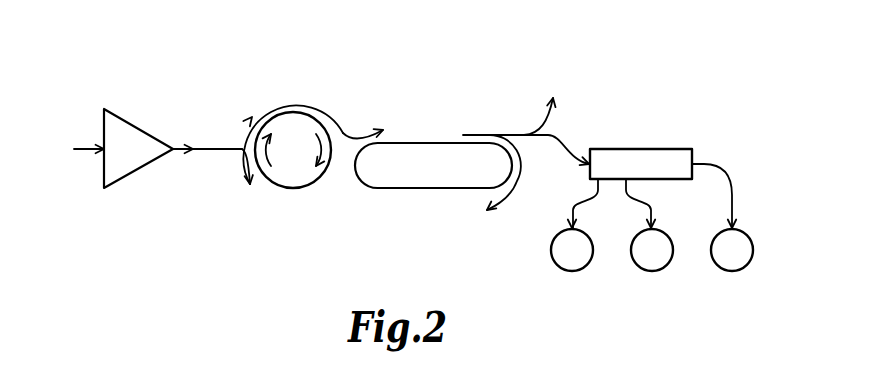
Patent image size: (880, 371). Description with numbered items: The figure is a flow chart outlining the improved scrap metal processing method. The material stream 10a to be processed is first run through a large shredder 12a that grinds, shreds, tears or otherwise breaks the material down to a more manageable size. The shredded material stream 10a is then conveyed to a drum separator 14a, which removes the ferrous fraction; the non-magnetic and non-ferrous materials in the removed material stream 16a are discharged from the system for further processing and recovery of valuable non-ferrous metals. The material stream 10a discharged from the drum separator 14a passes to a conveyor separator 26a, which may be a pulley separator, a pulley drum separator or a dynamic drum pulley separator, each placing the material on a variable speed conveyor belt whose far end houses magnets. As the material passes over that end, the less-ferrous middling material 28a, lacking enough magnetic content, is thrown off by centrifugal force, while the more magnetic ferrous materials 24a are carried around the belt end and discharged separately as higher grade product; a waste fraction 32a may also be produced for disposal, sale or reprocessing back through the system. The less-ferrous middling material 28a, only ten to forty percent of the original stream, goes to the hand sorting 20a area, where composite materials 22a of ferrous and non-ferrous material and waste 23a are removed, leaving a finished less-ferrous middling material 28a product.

The material stream 10a is at (332, 78).
The shredder 12a is at (130, 160).
The drum separator 14a is at (298, 175).
The removed material stream 16a is at (250, 182).
The conveyor separator 26a is at (390, 178).
The more magnetic ferrous materials 24a is at (485, 186).
The waste fraction 32a is at (548, 102).
The less-ferrous middling material 28a is at (565, 158).
The hand sorting 20a is at (627, 155).
The waste 23a is at (572, 257).
The composite materials 22a is at (651, 257).